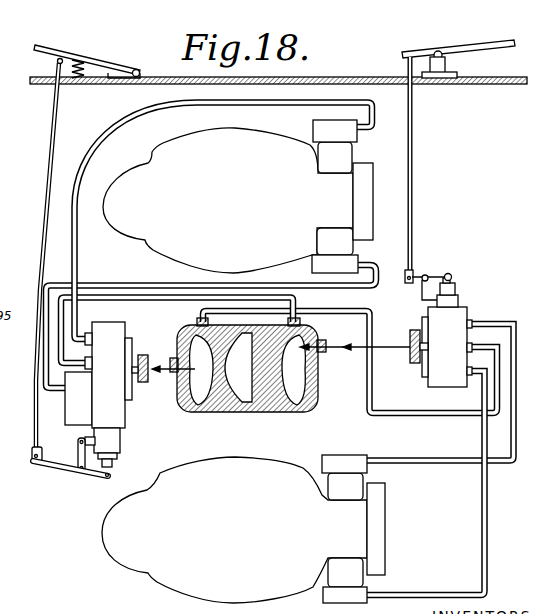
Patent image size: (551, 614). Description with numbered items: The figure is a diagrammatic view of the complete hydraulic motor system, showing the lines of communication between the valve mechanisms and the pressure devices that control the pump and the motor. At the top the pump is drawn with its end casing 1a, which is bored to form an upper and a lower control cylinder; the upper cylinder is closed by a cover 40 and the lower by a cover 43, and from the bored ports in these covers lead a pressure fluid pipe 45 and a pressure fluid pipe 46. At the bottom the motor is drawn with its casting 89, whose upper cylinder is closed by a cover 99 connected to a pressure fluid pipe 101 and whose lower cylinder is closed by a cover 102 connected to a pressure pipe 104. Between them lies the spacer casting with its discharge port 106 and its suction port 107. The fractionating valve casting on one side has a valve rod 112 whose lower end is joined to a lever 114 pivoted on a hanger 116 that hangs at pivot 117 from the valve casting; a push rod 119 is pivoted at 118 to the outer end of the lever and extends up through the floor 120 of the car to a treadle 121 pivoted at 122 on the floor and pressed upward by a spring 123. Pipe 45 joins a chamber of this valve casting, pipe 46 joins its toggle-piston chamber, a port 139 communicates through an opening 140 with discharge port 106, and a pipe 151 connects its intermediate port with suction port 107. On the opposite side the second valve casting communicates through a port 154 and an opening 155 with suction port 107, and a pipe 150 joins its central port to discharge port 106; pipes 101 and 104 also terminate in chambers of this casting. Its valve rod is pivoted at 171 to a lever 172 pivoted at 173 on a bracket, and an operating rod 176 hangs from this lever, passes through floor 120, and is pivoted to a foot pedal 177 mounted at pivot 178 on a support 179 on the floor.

The casing 1a is at (373, 209).
The cover 40 is at (313, 128).
The cover 43 is at (320, 262).
The pressure fluid pipe 45 is at (372, 126).
The pressure fluid pipe 46 is at (375, 272).
The casting 89 is at (387, 528).
The cover 99 is at (346, 460).
The pressure fluid pipe 101 is at (484, 322).
The cover 102 is at (323, 598).
The pressure pipe 104 is at (481, 397).
The discharge port 106 is at (201, 398).
The suction port 107 is at (303, 384).
The valve rod 112 is at (115, 460).
The lever 114 is at (64, 470).
The hanger 116 is at (78, 455).
The pivot 117 is at (80, 439).
The pivot 118 is at (31, 457).
The push rod 119 is at (43, 213).
The floor 120 is at (288, 79).
The treadle 121 is at (103, 60).
The pivot 122 is at (137, 70).
The spring 123 is at (92, 75).
The port 139 is at (150, 360).
The opening 140 is at (183, 388).
The pipe 150 is at (200, 318).
The pipe 151 is at (209, 295).
The port 154 is at (422, 348).
The opening 155 is at (318, 346).
The pivot 171 is at (455, 277).
The lever 172 is at (440, 274).
The pivot 173 is at (421, 275).
The operating rod 176 is at (412, 183).
The foot pedal 177 is at (496, 44).
The pivot 178 is at (439, 51).
The support 179 is at (450, 66).